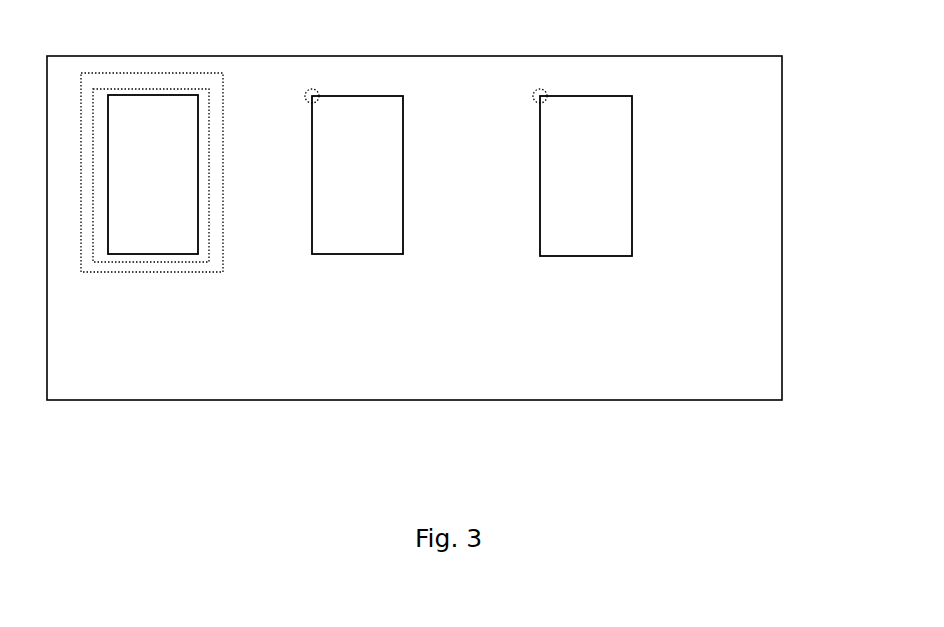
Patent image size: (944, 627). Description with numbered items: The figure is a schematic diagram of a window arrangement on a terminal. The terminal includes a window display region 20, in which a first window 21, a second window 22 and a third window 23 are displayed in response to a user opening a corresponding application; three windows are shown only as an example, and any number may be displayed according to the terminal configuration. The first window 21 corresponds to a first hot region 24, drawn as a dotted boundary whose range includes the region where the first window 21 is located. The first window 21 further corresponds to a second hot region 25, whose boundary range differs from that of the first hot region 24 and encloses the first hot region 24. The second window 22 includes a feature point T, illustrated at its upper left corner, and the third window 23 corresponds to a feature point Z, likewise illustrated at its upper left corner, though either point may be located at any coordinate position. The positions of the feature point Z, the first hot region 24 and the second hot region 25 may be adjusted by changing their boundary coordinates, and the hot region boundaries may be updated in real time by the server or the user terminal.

The window display region 20 is at (782, 56).
The first window 21 is at (170, 242).
The second window 22 is at (377, 242).
The third window 23 is at (588, 238).
The first hot region 24 is at (100, 248).
The second hot region 25 is at (222, 270).
The feature point T is at (310, 99).
The feature point Z is at (538, 98).